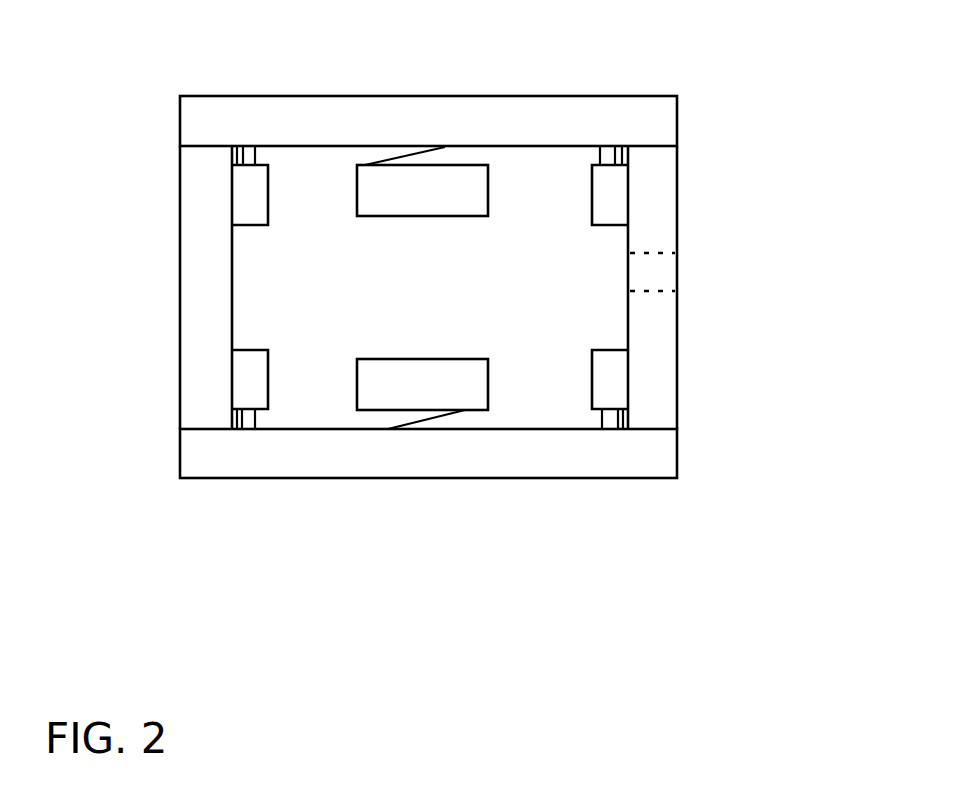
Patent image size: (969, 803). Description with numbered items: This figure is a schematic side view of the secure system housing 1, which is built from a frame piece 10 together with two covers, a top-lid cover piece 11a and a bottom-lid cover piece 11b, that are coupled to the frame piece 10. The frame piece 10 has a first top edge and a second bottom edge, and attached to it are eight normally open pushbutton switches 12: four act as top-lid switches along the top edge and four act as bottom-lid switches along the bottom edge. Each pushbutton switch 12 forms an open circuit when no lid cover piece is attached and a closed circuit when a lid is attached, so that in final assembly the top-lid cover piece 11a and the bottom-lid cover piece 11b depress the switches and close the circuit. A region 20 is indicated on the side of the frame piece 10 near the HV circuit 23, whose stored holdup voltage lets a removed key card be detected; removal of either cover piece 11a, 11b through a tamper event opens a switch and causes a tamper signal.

The secure system housing 1 is at (460, 616).
The frame piece 10 is at (181, 225).
The top-lid cover piece 11a is at (548, 96).
The bottom-lid cover piece 11b is at (573, 462).
The pushbutton switches 12 is at (415, 182).
The wall portion 20 is at (678, 304).
The HV circuit 23 is at (657, 267).